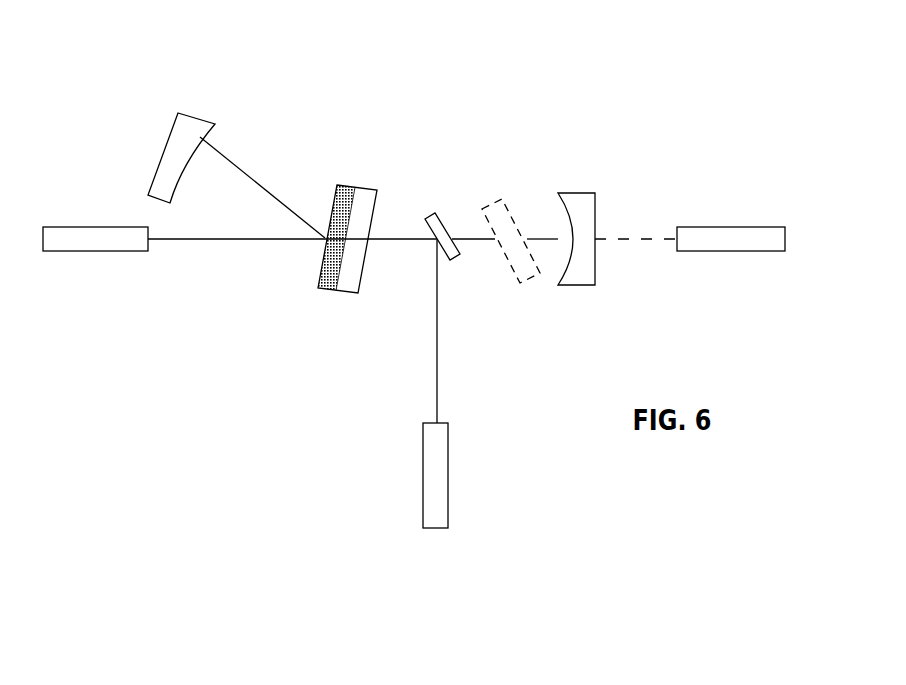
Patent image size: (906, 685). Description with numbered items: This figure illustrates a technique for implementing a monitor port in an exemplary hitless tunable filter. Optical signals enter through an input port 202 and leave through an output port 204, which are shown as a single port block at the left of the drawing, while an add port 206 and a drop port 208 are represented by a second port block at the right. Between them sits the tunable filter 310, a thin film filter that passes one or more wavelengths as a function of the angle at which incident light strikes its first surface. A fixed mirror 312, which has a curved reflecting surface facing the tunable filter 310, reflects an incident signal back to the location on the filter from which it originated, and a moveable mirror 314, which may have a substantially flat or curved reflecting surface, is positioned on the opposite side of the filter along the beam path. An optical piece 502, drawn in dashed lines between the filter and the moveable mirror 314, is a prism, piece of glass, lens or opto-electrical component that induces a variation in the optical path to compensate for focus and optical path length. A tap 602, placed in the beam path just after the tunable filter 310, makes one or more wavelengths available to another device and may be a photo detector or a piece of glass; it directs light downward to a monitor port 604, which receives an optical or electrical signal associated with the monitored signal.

The input port 202 is at (138, 292).
The output port 204 is at (53, 251).
The add port 206 is at (751, 196).
The drop port 208 is at (702, 227).
The tunable filter 310 is at (347, 185).
The fixed mirror 312 is at (164, 146).
The moveable mirror 314 is at (573, 193).
The optical piece 502 is at (490, 200).
The tap 602 is at (452, 262).
The monitor port 604 is at (423, 513).